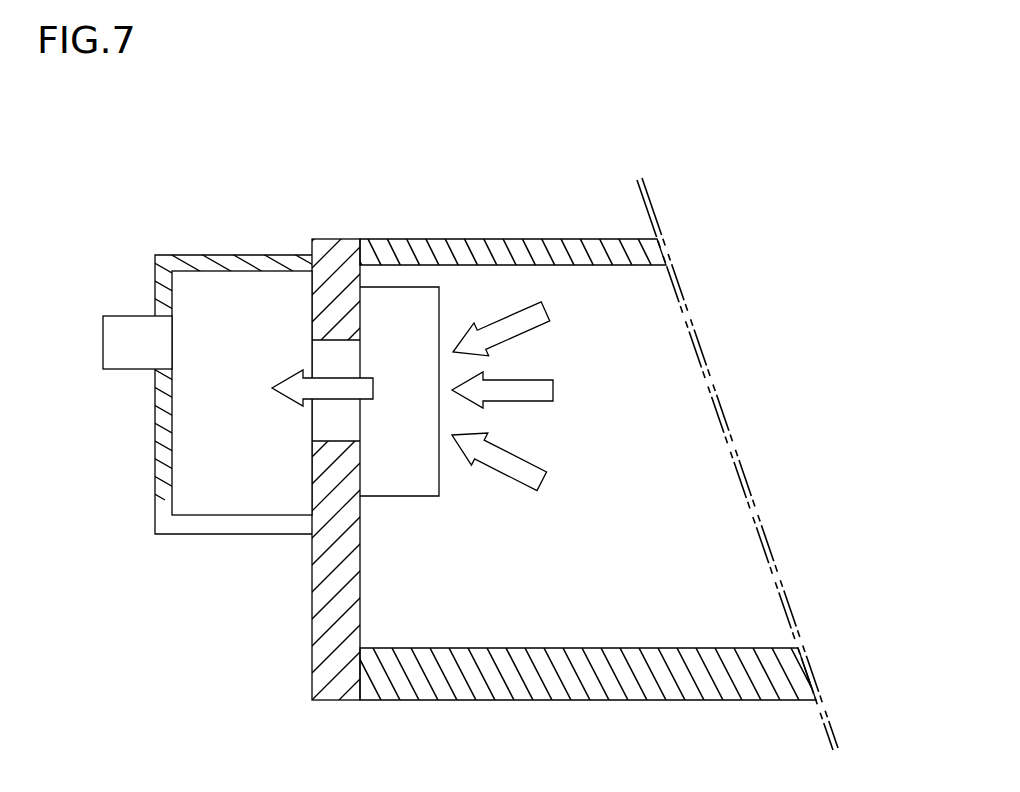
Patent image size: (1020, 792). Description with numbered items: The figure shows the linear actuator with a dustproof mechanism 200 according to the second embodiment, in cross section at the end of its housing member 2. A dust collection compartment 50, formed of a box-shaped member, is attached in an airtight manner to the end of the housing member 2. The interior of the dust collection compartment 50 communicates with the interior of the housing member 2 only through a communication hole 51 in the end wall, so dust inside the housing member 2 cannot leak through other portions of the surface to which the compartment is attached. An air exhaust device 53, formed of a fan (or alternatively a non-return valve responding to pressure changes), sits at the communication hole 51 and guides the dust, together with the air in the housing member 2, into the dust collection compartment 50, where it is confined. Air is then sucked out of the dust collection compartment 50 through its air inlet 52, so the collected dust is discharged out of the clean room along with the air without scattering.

The housing member 2 is at (483, 237).
The linear actuator with a dustproof mechanism 200 is at (622, 146).
The dust collection compartment 50 is at (238, 312).
The communication hole 51 is at (337, 341).
The air inlet 52 is at (131, 337).
The air exhaust device 53 is at (408, 472).